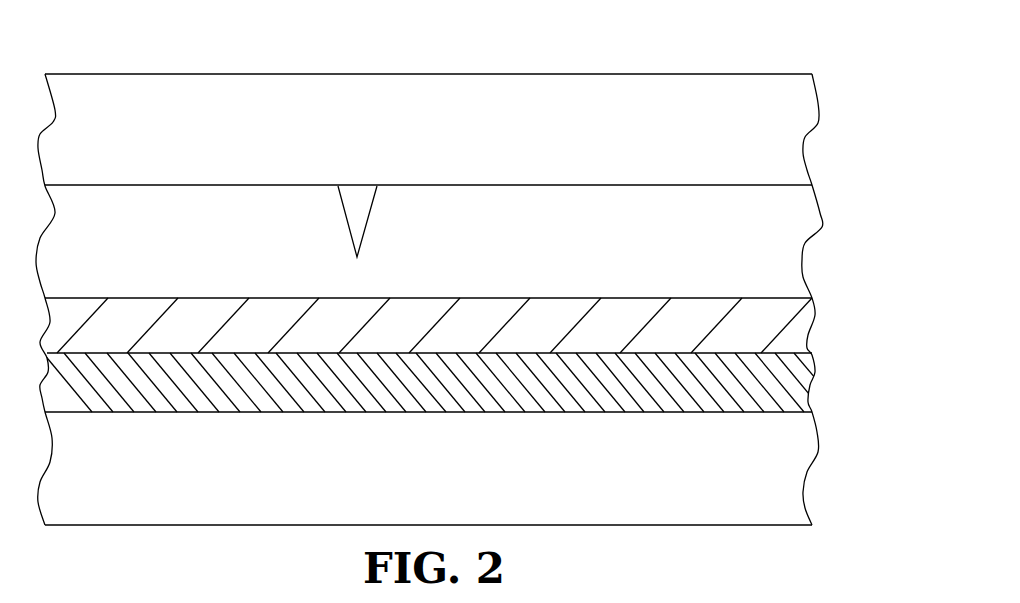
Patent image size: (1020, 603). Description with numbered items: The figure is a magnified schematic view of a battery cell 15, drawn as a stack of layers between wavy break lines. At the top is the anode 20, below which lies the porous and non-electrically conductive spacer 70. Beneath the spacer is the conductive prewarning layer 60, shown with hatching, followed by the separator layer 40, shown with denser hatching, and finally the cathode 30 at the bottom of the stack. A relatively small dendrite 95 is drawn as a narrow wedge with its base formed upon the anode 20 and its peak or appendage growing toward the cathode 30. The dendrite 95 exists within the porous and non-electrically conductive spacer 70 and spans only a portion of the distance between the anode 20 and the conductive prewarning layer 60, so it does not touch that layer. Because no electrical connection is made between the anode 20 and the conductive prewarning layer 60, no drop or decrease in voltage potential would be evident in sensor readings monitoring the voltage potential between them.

The battery cell 15 is at (305, 73).
The anode 20 is at (548, 100).
The porous and non-electrically conductive spacer 70 is at (190, 200).
The dendrite 95 is at (357, 203).
The conductive prewarning layer 60 is at (792, 341).
The separator layer 40 is at (792, 398).
The cathode 30 is at (708, 498).